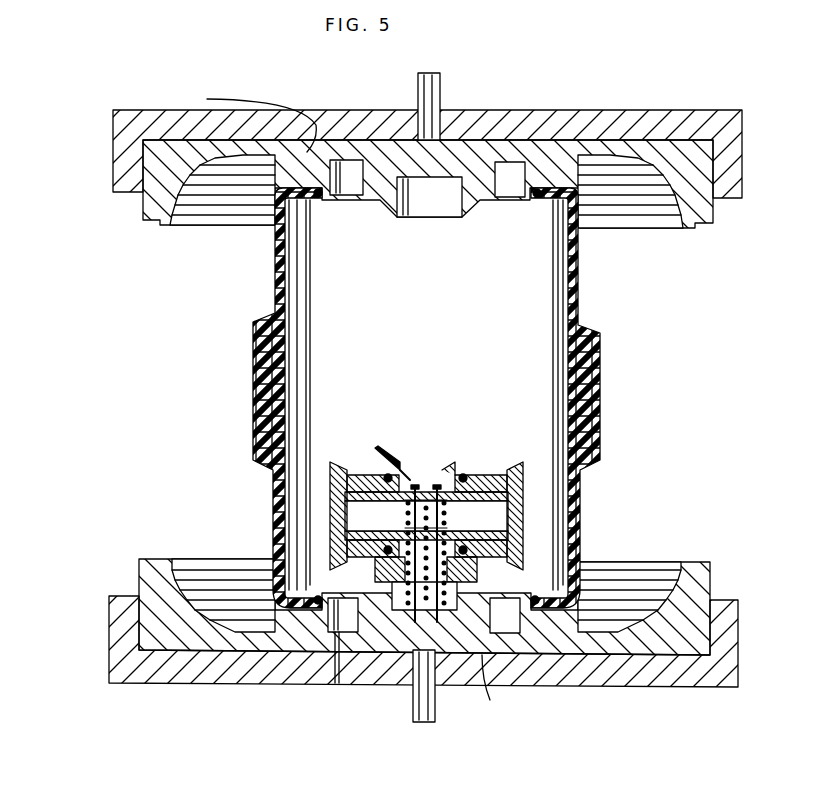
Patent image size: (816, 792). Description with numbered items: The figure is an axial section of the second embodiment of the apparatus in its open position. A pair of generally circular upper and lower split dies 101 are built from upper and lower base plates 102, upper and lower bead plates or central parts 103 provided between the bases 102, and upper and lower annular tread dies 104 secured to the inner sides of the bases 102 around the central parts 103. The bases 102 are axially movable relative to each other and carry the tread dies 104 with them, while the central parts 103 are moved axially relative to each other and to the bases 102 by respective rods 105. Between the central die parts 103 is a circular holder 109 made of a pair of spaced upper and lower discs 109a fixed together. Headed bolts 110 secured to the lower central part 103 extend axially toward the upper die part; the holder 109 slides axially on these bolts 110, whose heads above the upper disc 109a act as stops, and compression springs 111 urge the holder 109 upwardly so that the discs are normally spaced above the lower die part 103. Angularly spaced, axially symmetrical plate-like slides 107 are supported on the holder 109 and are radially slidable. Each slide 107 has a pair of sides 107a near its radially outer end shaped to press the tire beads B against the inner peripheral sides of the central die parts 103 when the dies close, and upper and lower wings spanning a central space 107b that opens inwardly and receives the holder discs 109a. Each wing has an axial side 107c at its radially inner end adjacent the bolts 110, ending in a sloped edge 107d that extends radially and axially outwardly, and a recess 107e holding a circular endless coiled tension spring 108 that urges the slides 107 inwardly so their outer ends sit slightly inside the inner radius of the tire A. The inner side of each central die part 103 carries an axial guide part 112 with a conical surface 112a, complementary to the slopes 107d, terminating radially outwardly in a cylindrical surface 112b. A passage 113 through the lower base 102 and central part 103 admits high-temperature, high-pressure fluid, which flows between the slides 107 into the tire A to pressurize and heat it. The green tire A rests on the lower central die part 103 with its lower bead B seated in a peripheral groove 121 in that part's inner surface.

The split dies 101 is at (126, 108).
The base plate 102 is at (112, 158).
The central part 103 is at (342, 401).
The annular tread die 104 is at (150, 210).
The rod 105 is at (441, 94).
The slide 107 is at (337, 482).
The side of slide 107a is at (343, 462).
The central space 107b is at (492, 512).
The axial side 107c is at (425, 478).
The sloped edge 107d is at (382, 448).
The recess 107e is at (403, 470).
The coiled tension spring 108 is at (472, 477).
The holder 109 is at (430, 482).
The holder disc 109a is at (488, 522).
The headed bolt 110 is at (405, 607).
The compression spring 111 is at (402, 525).
The guide part 112 is at (462, 220).
The conical surface 112a is at (378, 205).
The cylindrical surface 112b is at (493, 185).
The passage 113 is at (337, 684).
The peripheral groove 121 is at (542, 188).
The tire A is at (265, 333).
The tire bead B is at (312, 205).